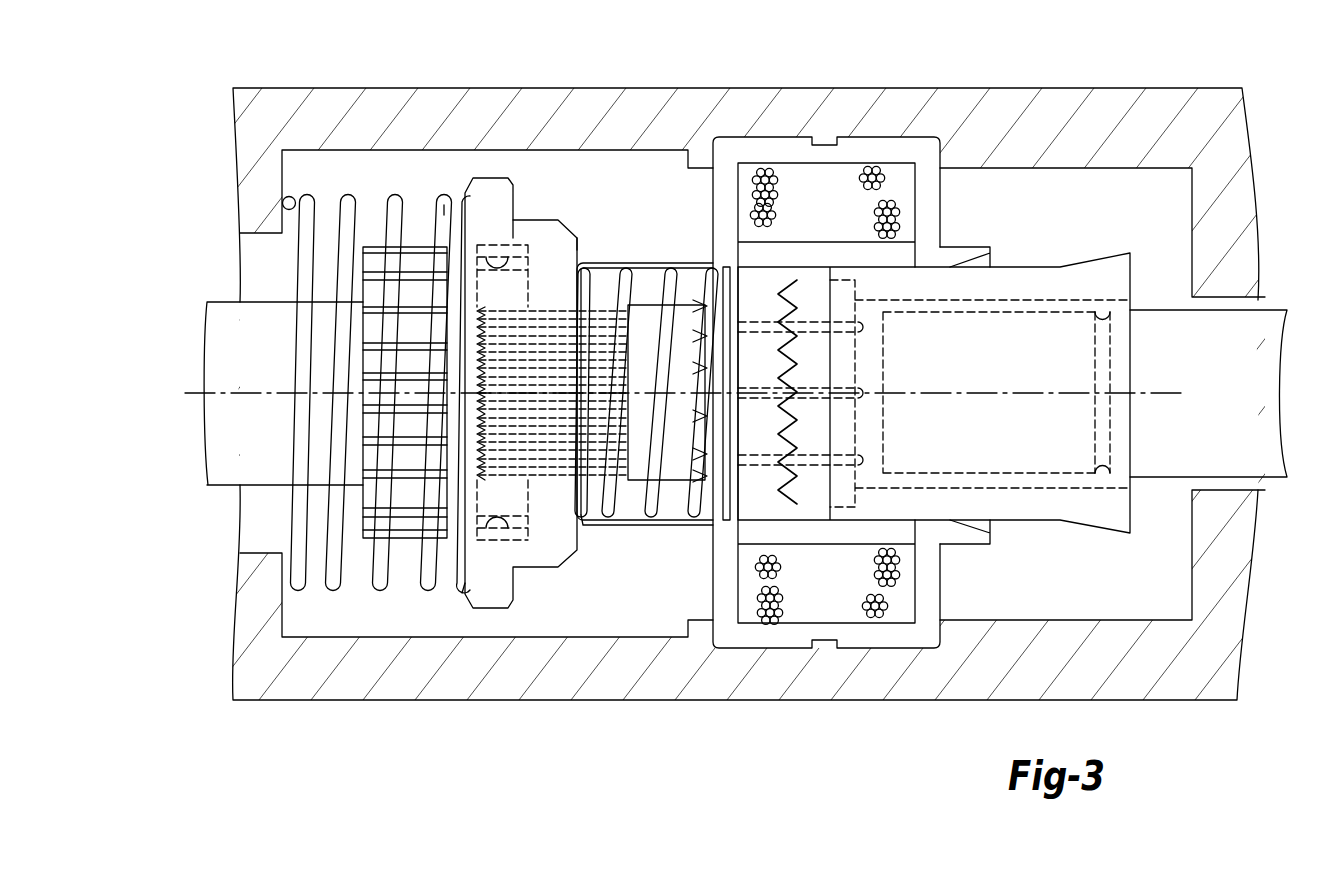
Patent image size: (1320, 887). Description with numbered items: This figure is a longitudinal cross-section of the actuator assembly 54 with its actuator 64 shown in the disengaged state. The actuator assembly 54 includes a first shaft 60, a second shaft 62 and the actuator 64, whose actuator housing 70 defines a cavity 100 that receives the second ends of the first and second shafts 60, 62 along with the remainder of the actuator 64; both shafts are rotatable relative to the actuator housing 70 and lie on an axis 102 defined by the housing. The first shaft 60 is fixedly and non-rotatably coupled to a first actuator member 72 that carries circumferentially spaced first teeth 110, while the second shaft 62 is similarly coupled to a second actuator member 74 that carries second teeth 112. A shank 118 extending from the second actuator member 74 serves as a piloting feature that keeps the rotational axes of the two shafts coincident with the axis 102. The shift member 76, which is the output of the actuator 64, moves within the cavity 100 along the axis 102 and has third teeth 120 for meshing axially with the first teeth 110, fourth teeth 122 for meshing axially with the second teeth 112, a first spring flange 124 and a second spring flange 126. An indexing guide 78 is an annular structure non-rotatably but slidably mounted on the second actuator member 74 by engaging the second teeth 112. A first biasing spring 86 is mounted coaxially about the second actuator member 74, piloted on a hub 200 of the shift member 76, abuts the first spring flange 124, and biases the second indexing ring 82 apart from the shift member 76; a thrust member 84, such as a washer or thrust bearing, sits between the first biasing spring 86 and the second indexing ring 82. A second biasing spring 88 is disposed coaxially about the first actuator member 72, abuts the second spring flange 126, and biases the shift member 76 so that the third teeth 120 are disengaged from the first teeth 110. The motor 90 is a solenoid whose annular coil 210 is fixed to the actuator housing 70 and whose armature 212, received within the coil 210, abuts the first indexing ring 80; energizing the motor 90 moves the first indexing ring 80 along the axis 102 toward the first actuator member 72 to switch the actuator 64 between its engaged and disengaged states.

The actuator assembly 54 is at (801, 82).
The first shaft 60 is at (216, 330).
The second shaft 62 is at (1270, 330).
The actuator 64 is at (626, 620).
The actuator housing 70 is at (738, 107).
The first actuator member 72 is at (373, 260).
The second actuator member 74 is at (535, 440).
The shift member 76 is at (492, 600).
The indexing guide 78 is at (760, 312).
The first indexing ring 80 is at (815, 358).
The second indexing ring 82 is at (765, 422).
The thrust member 84 is at (722, 483).
The first biasing spring 86 is at (670, 295).
The second biasing spring 88 is at (352, 200).
The motor 90 is at (1093, 178).
The cavity 100 is at (668, 160).
The axis 102 is at (1155, 393).
The first teeth 110 is at (373, 260).
The second teeth 112 is at (535, 440).
The shank 118 is at (446, 162).
The third teeth 120 is at (550, 318).
The fourth teeth 122 is at (563, 317).
The first spring flange 124 is at (580, 522).
The second spring flange 126 is at (472, 577).
The hub 200 is at (598, 292).
The coil 210 is at (928, 197).
The armature 212 is at (1020, 280).